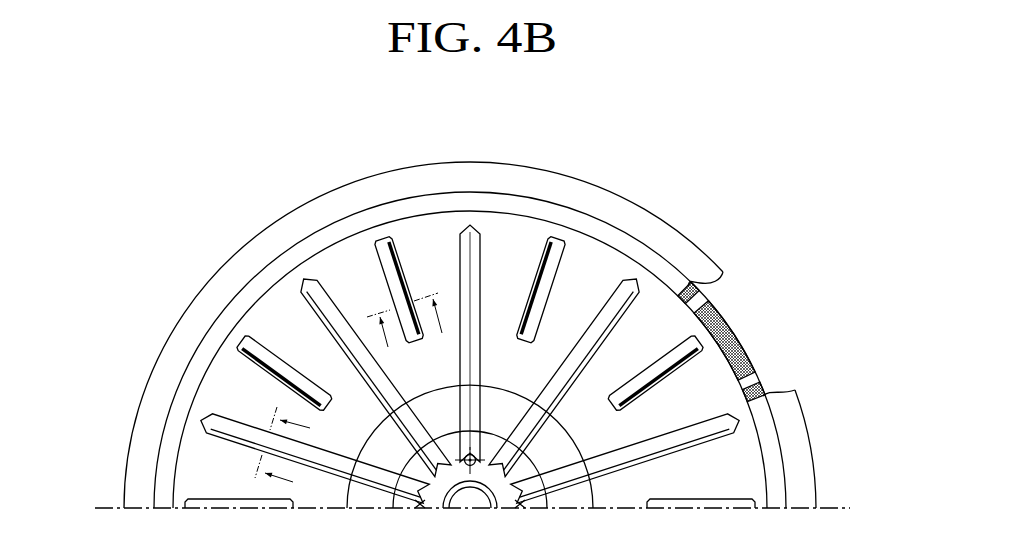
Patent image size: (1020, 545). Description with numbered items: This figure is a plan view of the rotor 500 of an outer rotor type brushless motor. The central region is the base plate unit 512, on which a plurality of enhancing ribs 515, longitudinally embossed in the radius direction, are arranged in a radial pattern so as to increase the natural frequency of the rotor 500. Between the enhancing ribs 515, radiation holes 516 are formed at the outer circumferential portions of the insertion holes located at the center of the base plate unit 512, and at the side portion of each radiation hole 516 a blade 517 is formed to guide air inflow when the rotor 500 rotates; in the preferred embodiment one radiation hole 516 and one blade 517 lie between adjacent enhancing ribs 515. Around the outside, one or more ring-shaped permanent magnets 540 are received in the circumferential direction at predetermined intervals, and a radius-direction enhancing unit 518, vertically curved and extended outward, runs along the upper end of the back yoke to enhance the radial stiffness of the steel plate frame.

The rotor 500 is at (705, 236).
The base plate unit 512 is at (193, 453).
The enhancing rib 515 is at (305, 280).
The radiation hole 516 is at (242, 338).
The blade 517 is at (238, 348).
The radius-direction enhancing unit 518 is at (617, 202).
The ring-shaped permanent magnet 540 is at (745, 348).